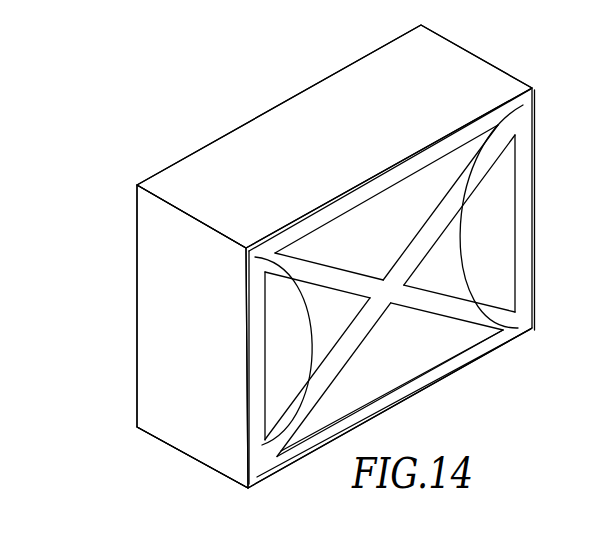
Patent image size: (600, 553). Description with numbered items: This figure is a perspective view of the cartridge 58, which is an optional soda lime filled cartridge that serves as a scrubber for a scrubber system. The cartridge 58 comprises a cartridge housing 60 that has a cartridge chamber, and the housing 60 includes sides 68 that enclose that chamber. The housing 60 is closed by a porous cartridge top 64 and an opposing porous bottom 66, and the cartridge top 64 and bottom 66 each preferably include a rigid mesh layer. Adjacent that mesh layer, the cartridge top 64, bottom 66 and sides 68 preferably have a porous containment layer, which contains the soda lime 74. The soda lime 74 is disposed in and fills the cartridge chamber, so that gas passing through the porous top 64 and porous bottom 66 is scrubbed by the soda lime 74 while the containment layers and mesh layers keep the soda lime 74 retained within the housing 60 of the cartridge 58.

The porous bottom 66 is at (238, 112).
The sides 68 is at (352, 135).
The cartridge housing 60 is at (155, 447).
The cartridge 58 is at (195, 475).
The porous cartridge top 64 is at (433, 350).
The soda lime 74 is at (387, 372).